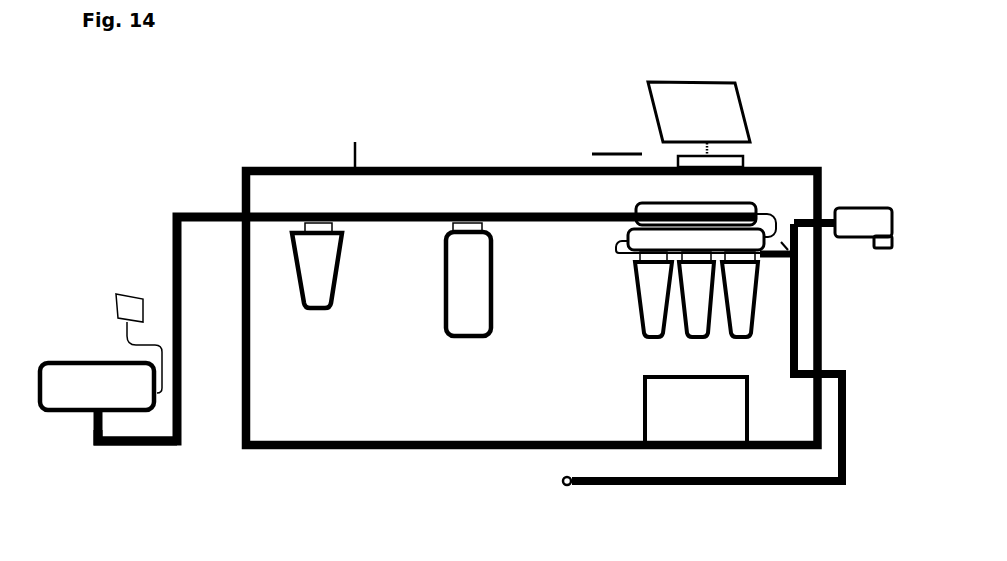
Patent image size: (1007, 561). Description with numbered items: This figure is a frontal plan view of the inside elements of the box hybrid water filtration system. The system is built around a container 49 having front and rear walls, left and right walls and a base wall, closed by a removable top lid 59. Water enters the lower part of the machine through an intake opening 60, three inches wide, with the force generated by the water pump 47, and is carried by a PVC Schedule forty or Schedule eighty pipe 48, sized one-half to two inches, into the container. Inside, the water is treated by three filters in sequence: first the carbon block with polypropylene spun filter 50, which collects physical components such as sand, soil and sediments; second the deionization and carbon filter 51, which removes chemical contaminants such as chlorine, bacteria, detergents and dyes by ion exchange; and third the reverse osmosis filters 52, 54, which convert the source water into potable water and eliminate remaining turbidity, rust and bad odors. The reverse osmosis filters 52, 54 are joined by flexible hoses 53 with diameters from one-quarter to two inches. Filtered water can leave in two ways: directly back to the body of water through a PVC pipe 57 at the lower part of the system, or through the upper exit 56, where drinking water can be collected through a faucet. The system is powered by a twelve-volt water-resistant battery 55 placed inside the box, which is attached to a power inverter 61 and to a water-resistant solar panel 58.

The water pump 47 is at (51, 355).
The PVC pipe 48 is at (193, 207).
The container 49 is at (285, 452).
The carbon block with polypropylene spun filter 50 is at (320, 315).
The deionization and carbon filter 51 is at (464, 342).
The reverse osmosis filter 52 is at (635, 198).
The flexible hoses 53 is at (610, 258).
The reverse osmosis filter 54 is at (652, 343).
The battery 55 is at (642, 412).
The upper exit 56 is at (903, 220).
The PVC pipe 57 is at (550, 482).
The solar panel 58 is at (755, 112).
The removable top lid 59 is at (358, 140).
The intake opening 60 is at (87, 425).
The power inverter 61 is at (599, 155).